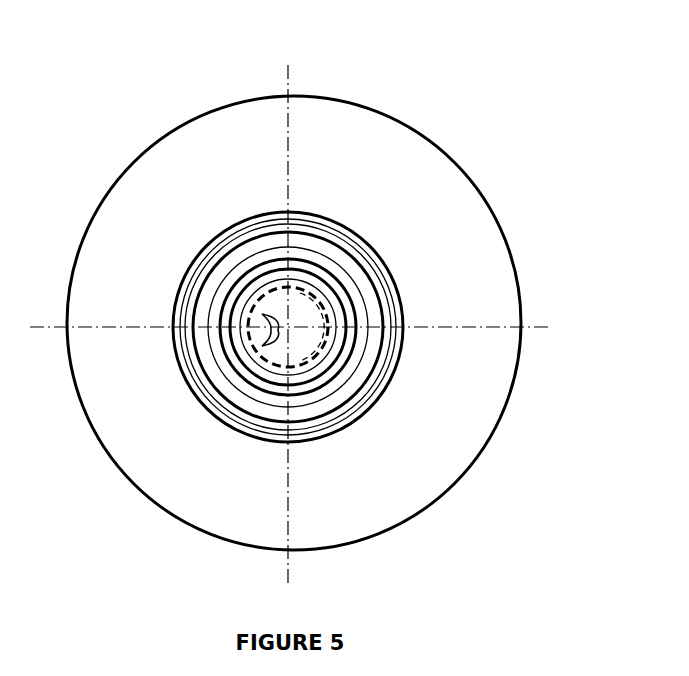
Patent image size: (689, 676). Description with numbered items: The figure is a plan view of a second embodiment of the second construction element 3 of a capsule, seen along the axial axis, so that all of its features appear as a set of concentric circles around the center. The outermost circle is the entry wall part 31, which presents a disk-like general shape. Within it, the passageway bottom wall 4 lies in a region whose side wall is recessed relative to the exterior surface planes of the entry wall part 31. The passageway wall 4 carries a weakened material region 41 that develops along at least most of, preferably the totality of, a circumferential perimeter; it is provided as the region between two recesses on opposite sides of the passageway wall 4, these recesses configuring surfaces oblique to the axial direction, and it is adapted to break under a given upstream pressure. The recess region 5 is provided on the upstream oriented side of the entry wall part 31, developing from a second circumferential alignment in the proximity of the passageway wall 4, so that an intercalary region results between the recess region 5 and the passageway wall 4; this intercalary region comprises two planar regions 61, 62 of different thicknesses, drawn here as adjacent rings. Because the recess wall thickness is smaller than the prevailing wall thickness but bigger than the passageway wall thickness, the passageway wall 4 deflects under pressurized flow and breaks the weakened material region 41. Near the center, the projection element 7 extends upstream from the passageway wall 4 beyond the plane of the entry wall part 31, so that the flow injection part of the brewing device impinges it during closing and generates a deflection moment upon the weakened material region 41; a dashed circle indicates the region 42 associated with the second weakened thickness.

The second construction element 3 is at (289, 314).
The entry wall part 31 is at (294, 323).
The passageway bottom wall 4 is at (303, 312).
The weakened material region 41 is at (238, 347).
The shaft opening 42 is at (331, 341).
The recess region 5 is at (395, 292).
The planar region 61 is at (358, 272).
The planar region 62 is at (322, 258).
The projection element 7 is at (258, 330).